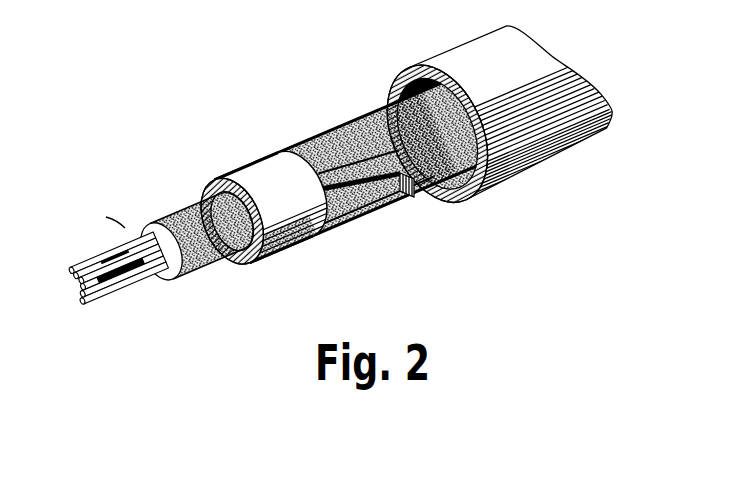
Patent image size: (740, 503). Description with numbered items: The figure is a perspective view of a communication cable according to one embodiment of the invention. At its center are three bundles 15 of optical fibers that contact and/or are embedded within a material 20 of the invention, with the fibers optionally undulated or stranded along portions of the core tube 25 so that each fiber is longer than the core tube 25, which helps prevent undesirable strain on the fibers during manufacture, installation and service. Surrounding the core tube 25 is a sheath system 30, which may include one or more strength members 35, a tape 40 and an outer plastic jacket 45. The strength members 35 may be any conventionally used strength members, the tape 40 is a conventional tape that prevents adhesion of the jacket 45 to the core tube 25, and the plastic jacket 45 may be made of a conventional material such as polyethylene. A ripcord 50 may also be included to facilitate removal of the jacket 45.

The bundles of optical fibers 15 is at (72, 278).
The material 20 is at (164, 281).
The core tube 25 is at (203, 193).
The sheath system 30 is at (342, 189).
The strength members 35 is at (407, 200).
The tape 40 is at (338, 222).
The outer plastic jacket 45 is at (453, 202).
The ripcord 50 is at (257, 157).